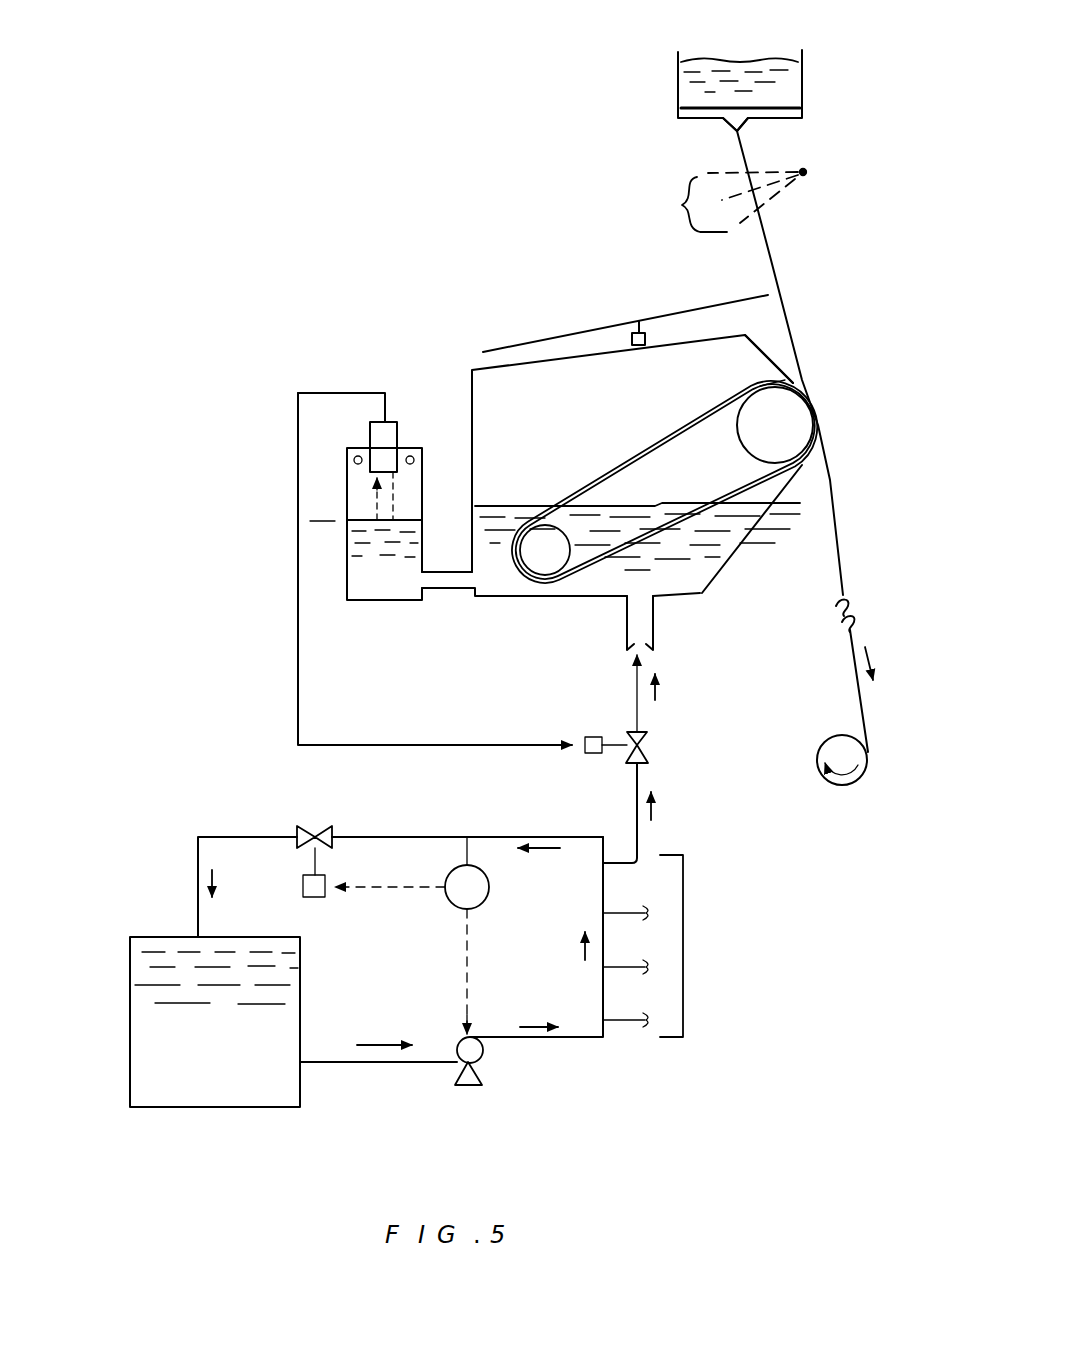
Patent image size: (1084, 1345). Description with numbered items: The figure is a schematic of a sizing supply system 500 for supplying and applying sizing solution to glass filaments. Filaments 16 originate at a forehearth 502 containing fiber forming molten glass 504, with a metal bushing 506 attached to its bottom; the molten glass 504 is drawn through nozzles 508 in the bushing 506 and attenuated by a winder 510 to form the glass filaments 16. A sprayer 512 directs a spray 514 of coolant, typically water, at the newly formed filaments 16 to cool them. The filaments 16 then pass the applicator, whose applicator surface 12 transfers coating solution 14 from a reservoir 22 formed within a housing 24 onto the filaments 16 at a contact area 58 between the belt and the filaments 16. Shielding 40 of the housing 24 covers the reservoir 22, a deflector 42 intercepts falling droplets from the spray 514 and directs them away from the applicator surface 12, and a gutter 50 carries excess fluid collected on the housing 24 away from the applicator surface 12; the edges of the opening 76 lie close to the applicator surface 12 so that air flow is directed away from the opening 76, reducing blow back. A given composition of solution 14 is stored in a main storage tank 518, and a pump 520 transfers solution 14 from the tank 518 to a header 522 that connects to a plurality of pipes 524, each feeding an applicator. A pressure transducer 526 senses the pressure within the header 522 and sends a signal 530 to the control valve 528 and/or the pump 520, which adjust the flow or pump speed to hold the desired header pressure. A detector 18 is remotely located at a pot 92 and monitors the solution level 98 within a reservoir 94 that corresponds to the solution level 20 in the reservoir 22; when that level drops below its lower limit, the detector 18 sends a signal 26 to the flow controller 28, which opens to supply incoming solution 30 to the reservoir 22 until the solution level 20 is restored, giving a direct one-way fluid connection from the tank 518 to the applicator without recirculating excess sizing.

The sizing supply system 500 is at (345, 277).
The forehearth 502 is at (803, 75).
The molten glass 504 is at (726, 62).
The metal bushing 506 is at (802, 108).
The nozzles 508 is at (722, 130).
The sprayer 512 is at (809, 172).
The spray 514 is at (711, 202).
The filaments 16 is at (778, 245).
The shielding 40 is at (547, 312).
The deflector 42 is at (718, 300).
The housing 24 is at (757, 343).
The gutter 50 is at (777, 358).
The opening 76 is at (790, 378).
The applicator surface 12 is at (807, 392).
The contact area 58 is at (820, 415).
The solution level 20 is at (793, 493).
The coating solution 14 is at (688, 575).
The reservoir 22 is at (567, 598).
The detector 18 is at (392, 422).
The pot 92 is at (450, 436).
The reservoir 94 is at (384, 579).
The solution level 98 is at (320, 518).
The signal 26 is at (298, 658).
The flow controller 28 is at (653, 745).
The incoming solution 30 is at (634, 690).
The winder 510 is at (840, 735).
The control valve 528 is at (318, 830).
The pressure transducer 526 is at (489, 887).
The signal 530 is at (465, 965).
The pipes 524 is at (684, 950).
The header 522 is at (603, 1000).
The pump 520 is at (480, 1078).
The main storage tank 518 is at (130, 1047).